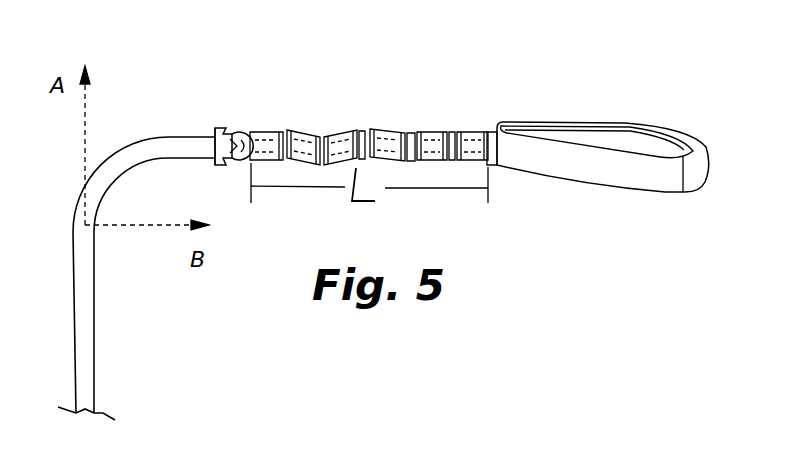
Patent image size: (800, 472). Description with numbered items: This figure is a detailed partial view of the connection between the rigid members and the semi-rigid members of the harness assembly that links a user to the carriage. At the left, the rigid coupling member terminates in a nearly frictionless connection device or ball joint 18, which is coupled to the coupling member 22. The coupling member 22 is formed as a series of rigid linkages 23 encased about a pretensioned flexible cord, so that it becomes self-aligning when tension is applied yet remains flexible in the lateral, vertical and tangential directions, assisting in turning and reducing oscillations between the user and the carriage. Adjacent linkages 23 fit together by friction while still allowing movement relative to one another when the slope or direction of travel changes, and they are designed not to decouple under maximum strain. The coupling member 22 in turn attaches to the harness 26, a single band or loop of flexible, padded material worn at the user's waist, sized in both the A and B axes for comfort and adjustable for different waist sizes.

The ball joint 18 is at (233, 122).
The coupling member 22 is at (369, 91).
The rigid linkages 23 is at (422, 132).
The harness 26 is at (673, 193).